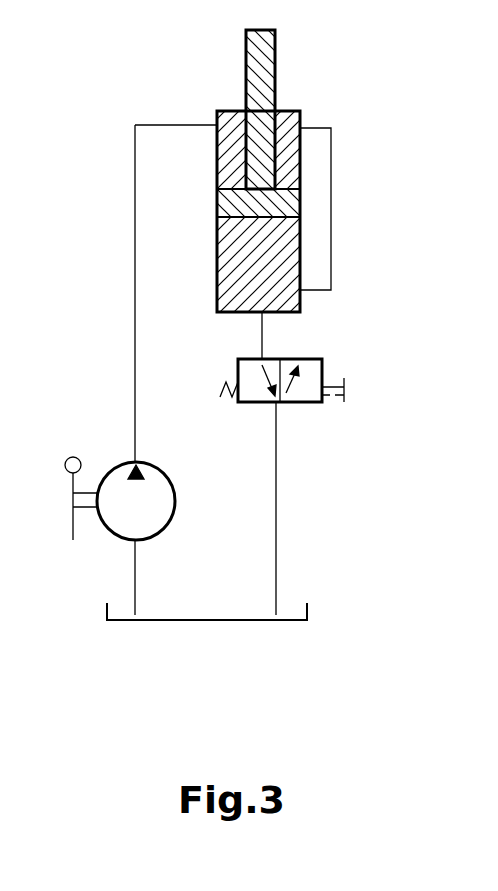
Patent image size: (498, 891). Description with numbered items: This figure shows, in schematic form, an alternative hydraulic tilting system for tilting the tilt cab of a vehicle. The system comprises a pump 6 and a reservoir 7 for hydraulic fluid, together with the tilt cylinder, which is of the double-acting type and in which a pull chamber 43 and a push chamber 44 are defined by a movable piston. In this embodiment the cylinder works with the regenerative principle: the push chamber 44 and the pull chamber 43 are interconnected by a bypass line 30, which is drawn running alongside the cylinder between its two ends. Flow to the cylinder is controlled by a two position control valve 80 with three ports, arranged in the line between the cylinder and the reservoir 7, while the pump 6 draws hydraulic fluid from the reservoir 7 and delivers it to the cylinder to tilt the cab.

The bypass line 30 is at (331, 210).
The pull chamber 43 is at (287, 118).
The push chamber 44 is at (296, 303).
The two position control valve 80 is at (310, 375).
The pump 6 is at (176, 501).
The reservoir 7 is at (212, 620).